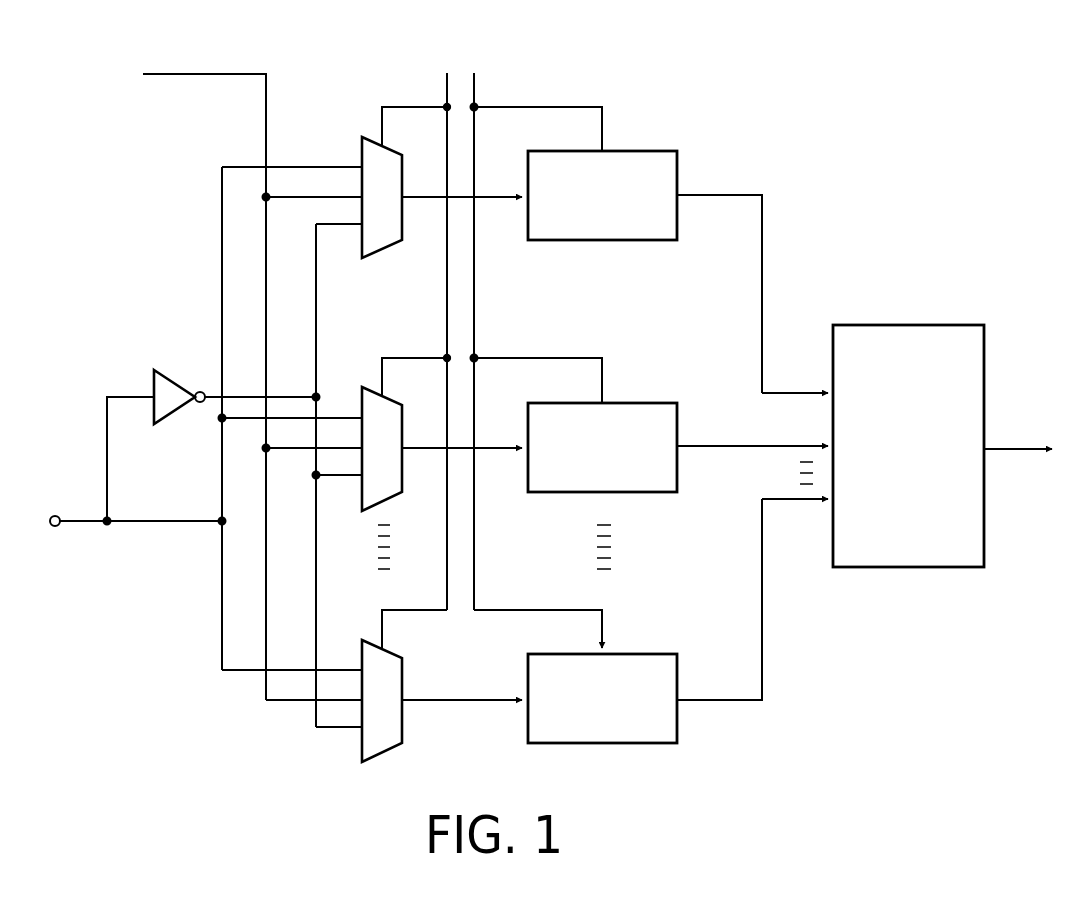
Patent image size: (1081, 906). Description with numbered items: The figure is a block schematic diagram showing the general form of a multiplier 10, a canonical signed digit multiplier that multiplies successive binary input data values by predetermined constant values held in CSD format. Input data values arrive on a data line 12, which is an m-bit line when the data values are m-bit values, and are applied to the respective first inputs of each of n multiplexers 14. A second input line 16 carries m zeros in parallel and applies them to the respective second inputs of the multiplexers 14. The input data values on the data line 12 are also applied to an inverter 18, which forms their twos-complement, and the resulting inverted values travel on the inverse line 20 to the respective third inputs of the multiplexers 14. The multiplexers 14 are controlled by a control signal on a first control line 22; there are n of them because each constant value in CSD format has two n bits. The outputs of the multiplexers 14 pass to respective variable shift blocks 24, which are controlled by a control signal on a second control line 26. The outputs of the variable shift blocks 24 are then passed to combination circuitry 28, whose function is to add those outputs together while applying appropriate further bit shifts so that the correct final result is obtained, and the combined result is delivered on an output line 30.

The multiplier 10 is at (790, 104).
The data line 12 is at (157, 523).
The multiplexers 14 is at (362, 137).
The second input line 16 is at (267, 73).
The inverter 18 is at (174, 368).
The inverse line 20 is at (246, 396).
The first control line 22 is at (446, 92).
The variable shift blocks 24 is at (652, 150).
The second control line 26 is at (475, 92).
The combination circuitry 28 is at (909, 324).
The output line 30 is at (1022, 448).